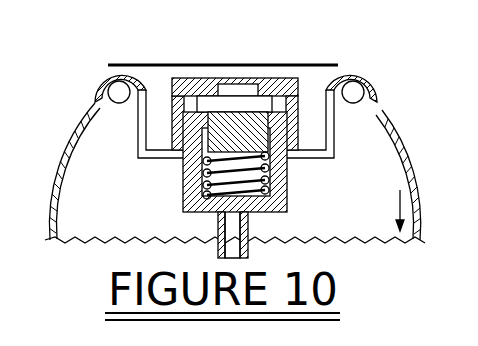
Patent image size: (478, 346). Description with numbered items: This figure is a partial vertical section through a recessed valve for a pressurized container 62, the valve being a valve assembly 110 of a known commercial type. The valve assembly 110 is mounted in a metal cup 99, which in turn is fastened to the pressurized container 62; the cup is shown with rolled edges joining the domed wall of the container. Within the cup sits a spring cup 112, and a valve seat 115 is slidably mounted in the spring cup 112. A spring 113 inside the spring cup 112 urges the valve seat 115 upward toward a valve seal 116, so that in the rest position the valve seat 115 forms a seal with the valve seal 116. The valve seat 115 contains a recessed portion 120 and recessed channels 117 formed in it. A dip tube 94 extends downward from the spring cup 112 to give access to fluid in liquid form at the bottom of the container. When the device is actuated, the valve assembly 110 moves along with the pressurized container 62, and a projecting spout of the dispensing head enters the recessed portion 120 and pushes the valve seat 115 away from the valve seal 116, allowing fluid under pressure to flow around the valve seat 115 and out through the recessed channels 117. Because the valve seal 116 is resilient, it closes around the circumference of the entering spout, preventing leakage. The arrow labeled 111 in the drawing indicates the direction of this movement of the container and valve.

The pressurized container 62 is at (404, 168).
The dip tube 94 is at (218, 222).
The metal cup 99 is at (97, 77).
The valve assembly 110 is at (374, 85).
The flow direction arrow 111 is at (390, 204).
The spring cup 112 is at (289, 205).
The spring 113 is at (268, 174).
The valve seat 115 is at (188, 97).
The valve seal 116 is at (262, 88).
The recessed channels 117 is at (200, 140).
The recessed portion 120 is at (280, 118).